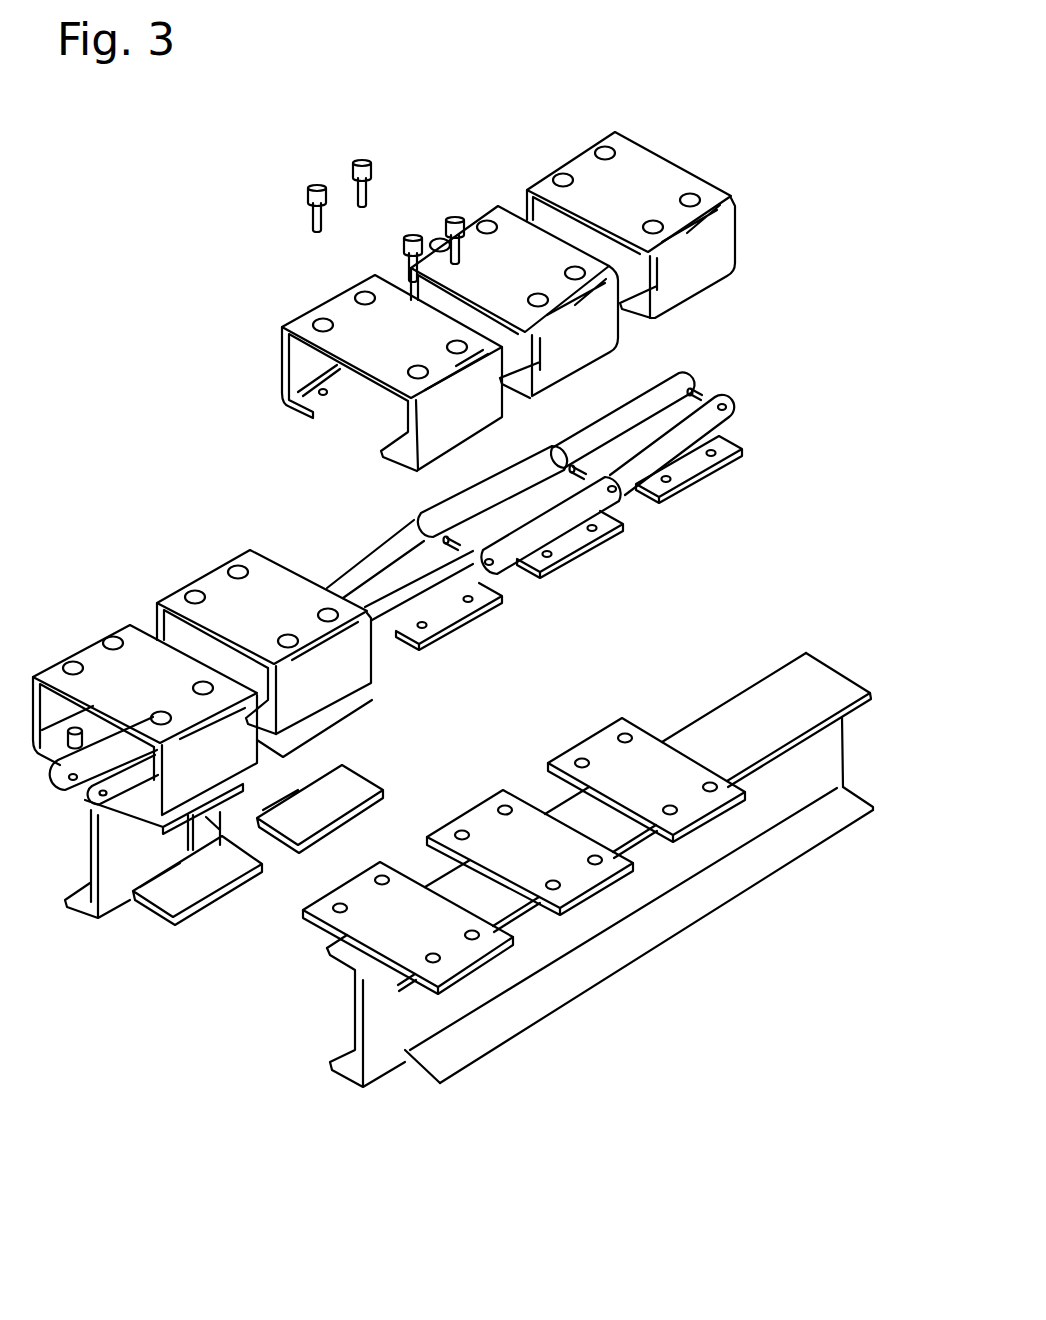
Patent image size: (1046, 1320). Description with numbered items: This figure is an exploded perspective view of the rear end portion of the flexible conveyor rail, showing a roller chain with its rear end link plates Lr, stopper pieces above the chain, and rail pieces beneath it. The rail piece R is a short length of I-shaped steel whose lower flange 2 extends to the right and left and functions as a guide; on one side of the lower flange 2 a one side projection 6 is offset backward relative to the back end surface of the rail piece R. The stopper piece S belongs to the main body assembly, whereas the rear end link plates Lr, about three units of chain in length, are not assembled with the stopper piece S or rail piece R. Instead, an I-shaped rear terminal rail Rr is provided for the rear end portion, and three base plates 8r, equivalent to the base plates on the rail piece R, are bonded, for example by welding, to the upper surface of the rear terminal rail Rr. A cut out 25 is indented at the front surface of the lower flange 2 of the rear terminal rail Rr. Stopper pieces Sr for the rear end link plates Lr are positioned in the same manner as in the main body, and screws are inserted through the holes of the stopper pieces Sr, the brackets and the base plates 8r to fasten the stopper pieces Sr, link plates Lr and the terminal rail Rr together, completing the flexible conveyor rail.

The stopper pieces Sr is at (387, 330).
The stopper piece S is at (225, 603).
The rear end link plates Lr is at (693, 375).
The base plates 8r is at (397, 893).
The one side projection 6 is at (350, 788).
The rail piece R is at (279, 903).
The rear terminal rail Rr is at (584, 915).
The lower flange 2 is at (586, 974).
The cut out 25 is at (405, 1075).